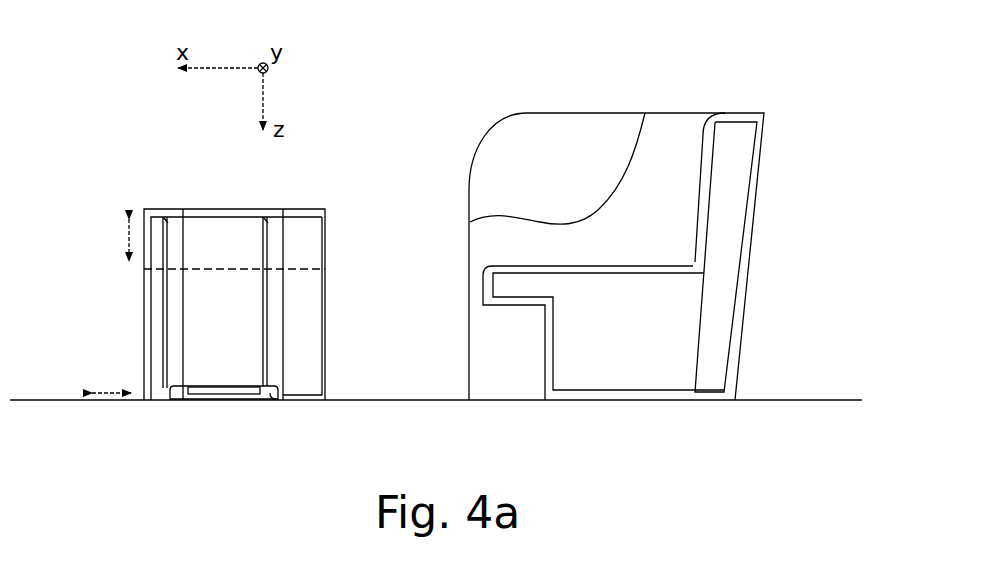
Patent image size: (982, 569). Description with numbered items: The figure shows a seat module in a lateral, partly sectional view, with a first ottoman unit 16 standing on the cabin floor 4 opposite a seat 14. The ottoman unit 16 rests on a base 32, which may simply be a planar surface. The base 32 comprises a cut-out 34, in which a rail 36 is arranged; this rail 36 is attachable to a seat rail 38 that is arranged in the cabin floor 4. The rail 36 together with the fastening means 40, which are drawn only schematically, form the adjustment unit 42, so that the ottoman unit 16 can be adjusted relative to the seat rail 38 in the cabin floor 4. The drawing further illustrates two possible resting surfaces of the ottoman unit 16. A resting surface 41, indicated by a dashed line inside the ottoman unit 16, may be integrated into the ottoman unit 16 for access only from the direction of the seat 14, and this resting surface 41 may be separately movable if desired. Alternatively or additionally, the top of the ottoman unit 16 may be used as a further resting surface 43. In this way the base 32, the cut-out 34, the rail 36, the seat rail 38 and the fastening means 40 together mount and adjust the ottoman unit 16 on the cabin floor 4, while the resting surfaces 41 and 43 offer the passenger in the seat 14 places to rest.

The cabin floor 4 is at (812, 398).
The seat 14 is at (666, 94).
The first ottoman unit 16 is at (255, 305).
The base 32 is at (307, 388).
The cut-out 34 is at (275, 400).
The rail 36 is at (200, 387).
The seat rail 38 is at (223, 403).
The fastening means 40 is at (222, 384).
The resting surface 41 is at (300, 269).
The adjustment unit 42 is at (221, 309).
The resting surface 43 is at (300, 210).